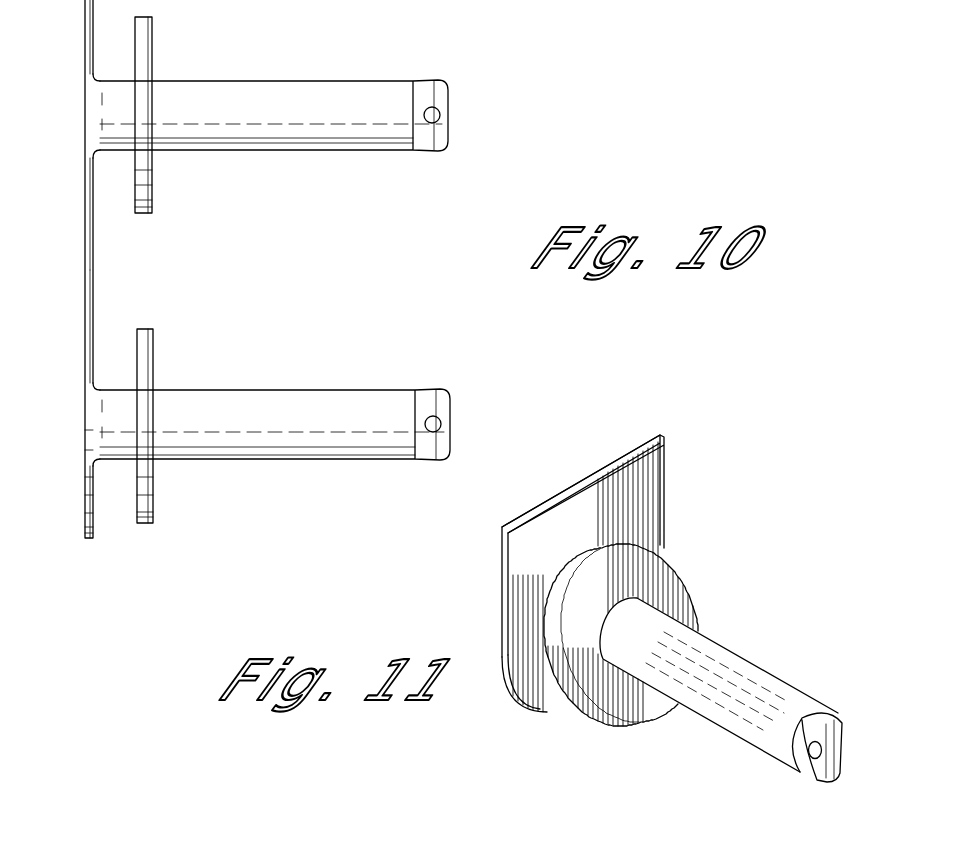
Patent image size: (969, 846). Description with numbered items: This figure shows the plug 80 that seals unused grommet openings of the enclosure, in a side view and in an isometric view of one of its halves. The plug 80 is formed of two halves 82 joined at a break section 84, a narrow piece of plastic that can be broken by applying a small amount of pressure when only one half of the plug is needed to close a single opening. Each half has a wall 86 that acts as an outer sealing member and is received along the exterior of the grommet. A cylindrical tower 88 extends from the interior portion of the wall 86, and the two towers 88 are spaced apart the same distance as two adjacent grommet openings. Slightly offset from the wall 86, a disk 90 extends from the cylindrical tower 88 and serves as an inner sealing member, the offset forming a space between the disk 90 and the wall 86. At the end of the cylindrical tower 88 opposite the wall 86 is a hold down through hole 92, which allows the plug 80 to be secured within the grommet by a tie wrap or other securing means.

In FIG. 10, the plug 80 is at (85, 68).
In FIG. 11, the plug 80 is at (660, 492).
In FIG. 10, the halves 82 is at (85, 228).
In FIG. 11, the halves 82 is at (533, 683).
In FIG. 10, the break section 84 is at (93, 270).
In FIG. 11, the break section 84 is at (646, 445).
In FIG. 10, the wall 86 is at (87, 343).
In FIG. 11, the wall 86 is at (525, 555).
In FIG. 10, the cylindrical tower 88 is at (344, 92).
In FIG. 11, the cylindrical tower 88 is at (733, 657).
In FIG. 10, the disk 90 is at (148, 190).
In FIG. 11, the disk 90 is at (672, 578).
In FIG. 10, the hold down through hole 92 is at (432, 123).
In FIG. 11, the hold down through hole 92 is at (812, 742).